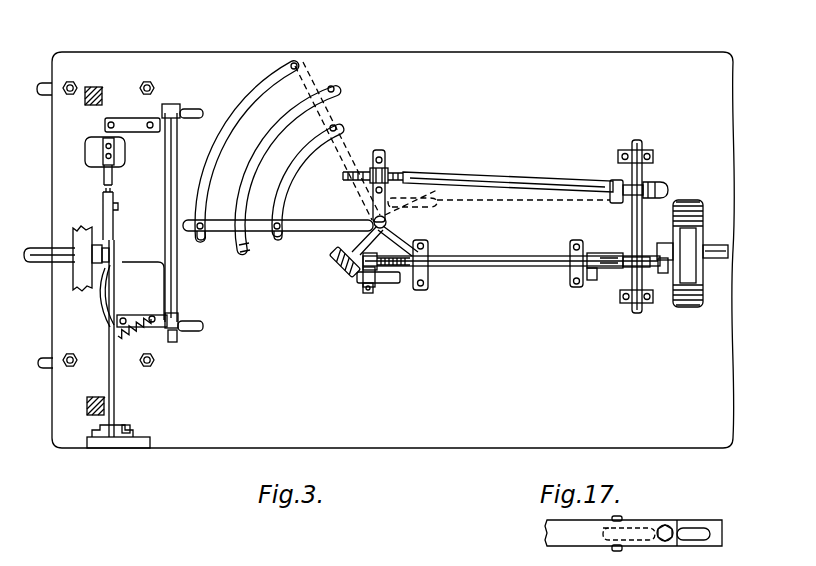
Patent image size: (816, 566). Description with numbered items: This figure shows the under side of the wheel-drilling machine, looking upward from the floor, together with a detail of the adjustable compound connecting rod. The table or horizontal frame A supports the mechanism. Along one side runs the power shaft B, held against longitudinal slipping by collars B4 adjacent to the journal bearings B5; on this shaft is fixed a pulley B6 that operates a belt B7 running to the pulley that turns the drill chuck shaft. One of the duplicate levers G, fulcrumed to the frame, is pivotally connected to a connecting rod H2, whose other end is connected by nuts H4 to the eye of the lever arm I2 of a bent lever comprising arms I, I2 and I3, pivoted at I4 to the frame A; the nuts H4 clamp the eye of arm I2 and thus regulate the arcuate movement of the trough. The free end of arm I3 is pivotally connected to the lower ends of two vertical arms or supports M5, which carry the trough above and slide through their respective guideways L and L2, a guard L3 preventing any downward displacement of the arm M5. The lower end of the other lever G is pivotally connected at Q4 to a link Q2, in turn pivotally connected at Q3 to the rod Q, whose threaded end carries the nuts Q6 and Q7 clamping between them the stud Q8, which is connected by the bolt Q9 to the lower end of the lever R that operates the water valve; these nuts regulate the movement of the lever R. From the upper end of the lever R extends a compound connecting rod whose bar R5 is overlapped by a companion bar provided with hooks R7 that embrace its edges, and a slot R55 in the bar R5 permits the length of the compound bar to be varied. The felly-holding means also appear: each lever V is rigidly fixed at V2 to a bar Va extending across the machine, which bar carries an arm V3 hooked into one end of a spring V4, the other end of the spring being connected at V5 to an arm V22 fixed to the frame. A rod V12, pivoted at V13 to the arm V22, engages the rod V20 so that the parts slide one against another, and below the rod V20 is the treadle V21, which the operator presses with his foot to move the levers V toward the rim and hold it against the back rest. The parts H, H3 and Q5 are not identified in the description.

In FIG. 3, the table or horizontal frame A is at (508, 67).
In FIG. 3, the arm fixed to the frame V22 is at (123, 120).
In FIG. 3, the fixing point of lever V to bar Va V2 is at (168, 104).
In FIG. 3, the lever V is at (197, 351).
In FIG. 3, the bar Va is at (165, 203).
In FIG. 3, the treadle V21 is at (85, 150).
In FIG. 3, the rod V20 is at (114, 177).
In FIG. 3, the arm or rod V12 is at (116, 262).
In FIG. 3, the arm V3 is at (123, 262).
In FIG. 3, the spring connection point V5 is at (152, 316).
In FIG. 3, the spring V4 is at (137, 334).
In FIG. 3, the pivot of rod V12 V13 is at (131, 428).
In FIG. 3, the power shaft B is at (43, 252).
In FIG. 3, the collar B4 is at (92, 258).
In FIG. 3, the journal bearing B5 is at (79, 267).
In FIG. 3, the pulley B6 is at (703, 215).
In FIG. 3, the belt B7 is at (692, 200).
In FIG. 3, the guideway L is at (213, 163).
In FIG. 3, the guard L3 is at (257, 163).
In FIG. 3, the guideway L2 is at (288, 180).
In FIG. 3, the arm of bent lever I is at (383, 172).
In FIG. 3, the lever arm I2 is at (373, 200).
In FIG. 3, the arm of bent lever I3 is at (313, 231).
In FIG. 3, the pivot of bent lever I4 is at (387, 222).
In FIG. 3, the clamp H is at (616, 181).
In FIG. 3, the connecting rod H2 is at (483, 177).
In FIG. 3, the threaded rod H3 is at (403, 174).
In FIG. 3, the nut H4 is at (413, 157).
In FIG. 3, the lever G is at (642, 183).
In FIG. 3, the vertical arm or support M5 is at (280, 233).
In FIG. 3, the rod Q is at (465, 266).
In FIG. 3, the link Q2 is at (605, 268).
In FIG. 3, the pivot connection Q3 is at (591, 277).
In FIG. 3, the pivot connection Q4 is at (642, 273).
In FIG. 3, the bracket Q5 is at (403, 266).
In FIG. 3, the nut Q6 is at (386, 255).
In FIG. 3, the nut Q7 is at (350, 257).
In FIG. 3, the stud Q8 is at (368, 295).
In FIG. 3, the bolt Q9 is at (368, 285).
In FIG. 3, the lever R is at (383, 283).
In FIG. 17, the bar R5 is at (568, 546).
In FIG. 17, the hook R7 is at (622, 518).
In FIG. 17, the slot R55 is at (710, 540).